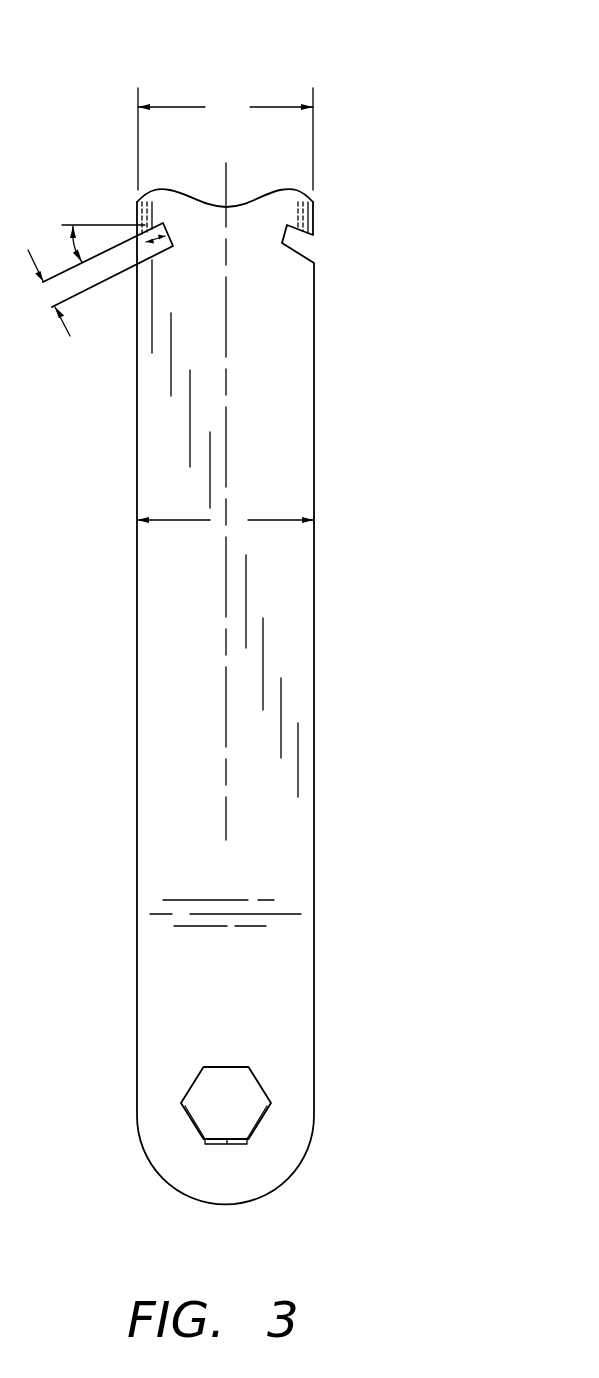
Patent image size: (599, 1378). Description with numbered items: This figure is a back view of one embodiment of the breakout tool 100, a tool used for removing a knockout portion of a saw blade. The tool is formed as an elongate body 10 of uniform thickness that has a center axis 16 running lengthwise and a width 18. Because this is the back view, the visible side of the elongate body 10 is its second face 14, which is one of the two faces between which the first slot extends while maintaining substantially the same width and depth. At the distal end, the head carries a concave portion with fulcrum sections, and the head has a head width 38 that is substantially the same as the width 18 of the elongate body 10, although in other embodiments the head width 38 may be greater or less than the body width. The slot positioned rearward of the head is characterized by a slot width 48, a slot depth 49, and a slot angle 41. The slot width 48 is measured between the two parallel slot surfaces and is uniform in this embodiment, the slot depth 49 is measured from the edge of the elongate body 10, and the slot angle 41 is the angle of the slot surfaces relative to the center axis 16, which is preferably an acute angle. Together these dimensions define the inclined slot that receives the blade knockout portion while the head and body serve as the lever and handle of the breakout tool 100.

The breakout tool 100 is at (343, 55).
The elongate body 10 is at (315, 642).
The second face 14 is at (163, 597).
The center axis 16 is at (226, 357).
The width 18 is at (225, 520).
The head width 38 is at (225, 139).
The slot angle 41 is at (88, 243).
The slot width 48 is at (48, 293).
The slot depth 49 is at (158, 246).